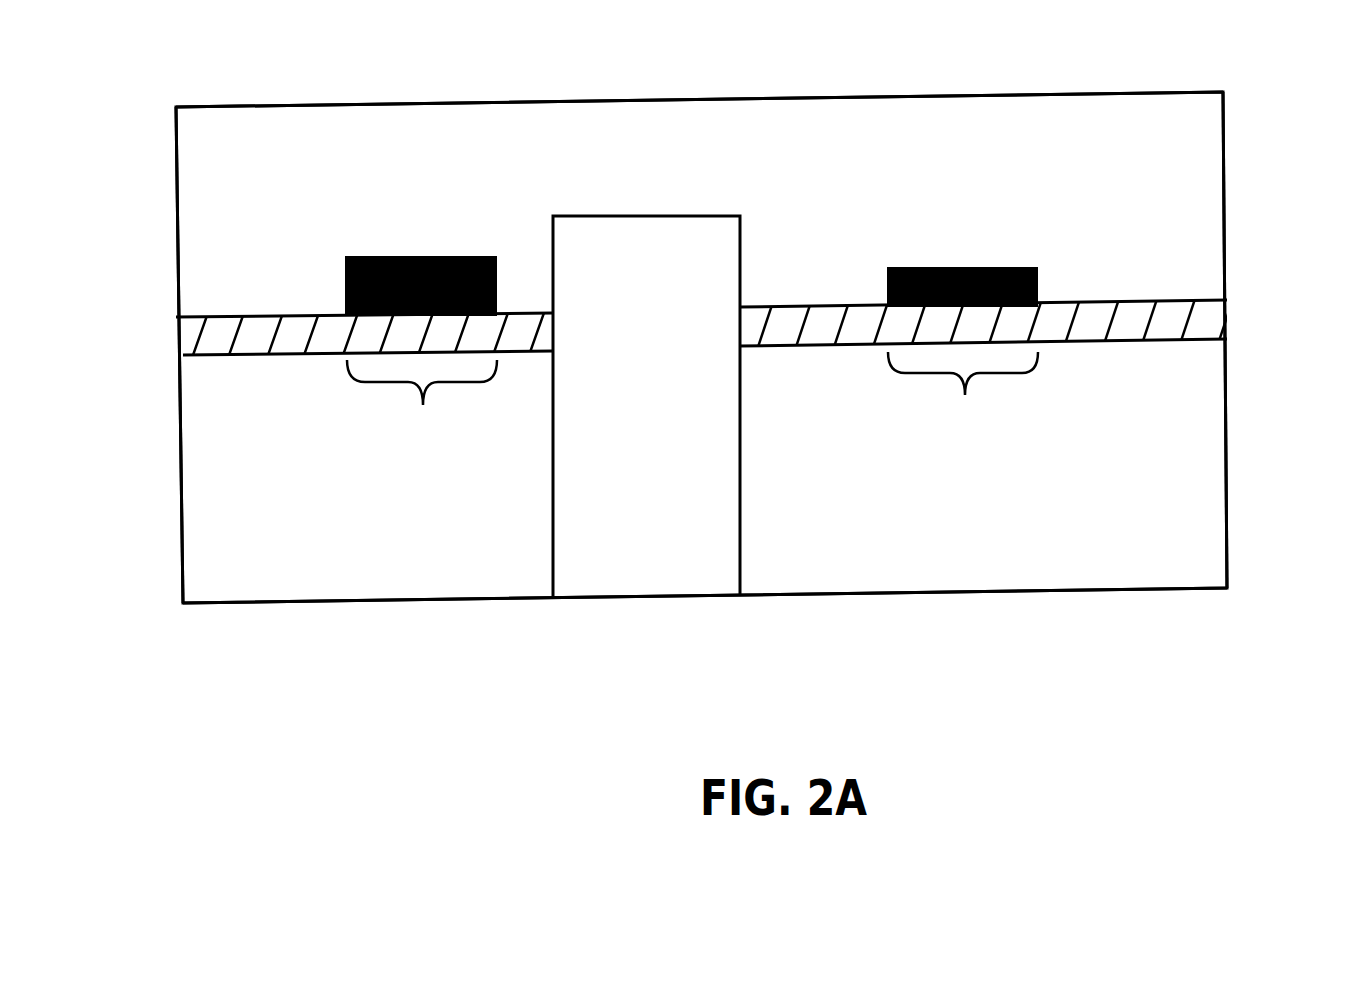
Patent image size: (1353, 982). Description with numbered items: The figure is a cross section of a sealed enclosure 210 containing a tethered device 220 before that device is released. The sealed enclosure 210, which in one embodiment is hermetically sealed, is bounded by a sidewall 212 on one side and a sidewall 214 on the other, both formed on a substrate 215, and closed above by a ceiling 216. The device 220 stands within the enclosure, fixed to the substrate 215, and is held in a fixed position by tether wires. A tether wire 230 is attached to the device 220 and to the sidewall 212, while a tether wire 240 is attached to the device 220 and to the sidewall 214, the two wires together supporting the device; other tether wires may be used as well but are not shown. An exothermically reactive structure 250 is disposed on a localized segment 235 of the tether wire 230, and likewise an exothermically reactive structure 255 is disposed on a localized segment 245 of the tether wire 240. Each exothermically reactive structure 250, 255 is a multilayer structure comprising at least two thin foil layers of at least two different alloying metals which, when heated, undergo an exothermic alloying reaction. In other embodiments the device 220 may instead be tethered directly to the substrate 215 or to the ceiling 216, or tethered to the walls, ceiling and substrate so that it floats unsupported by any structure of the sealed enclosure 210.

The sealed enclosure 210 is at (1188, 453).
The sidewall 212 is at (1224, 173).
The sidewall 214 is at (176, 145).
The substrate 215 is at (1058, 590).
The ceiling 216 is at (410, 102).
The device 220 is at (627, 253).
The tether wire 230 is at (784, 347).
The localized segment 235 is at (963, 394).
The tether wire 240 is at (255, 356).
The localized segment 245 is at (422, 402).
The exothermically reactive structure 250 is at (920, 268).
The exothermically reactive structure 255 is at (367, 257).